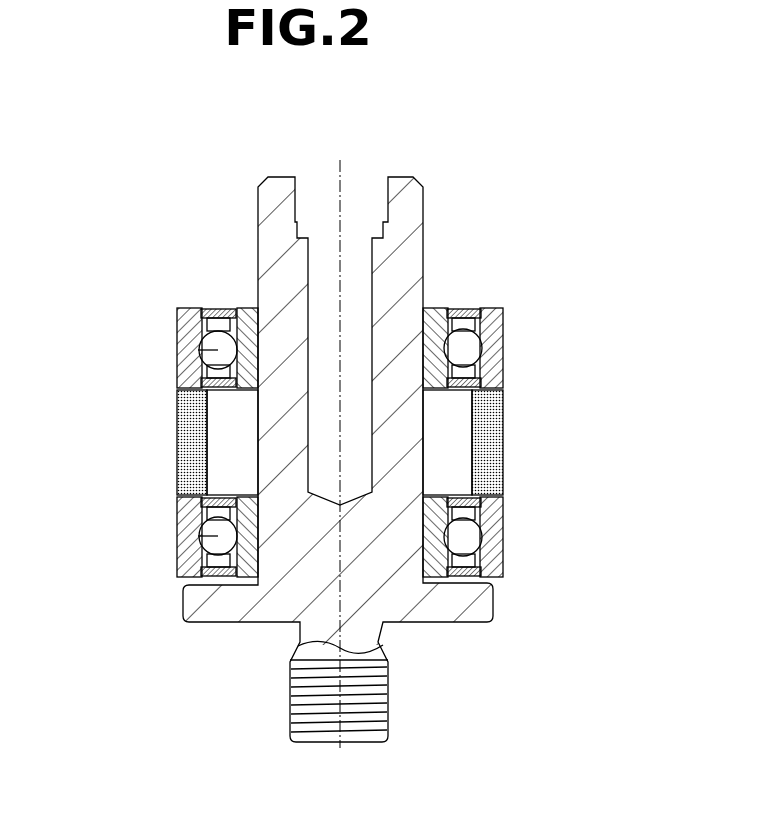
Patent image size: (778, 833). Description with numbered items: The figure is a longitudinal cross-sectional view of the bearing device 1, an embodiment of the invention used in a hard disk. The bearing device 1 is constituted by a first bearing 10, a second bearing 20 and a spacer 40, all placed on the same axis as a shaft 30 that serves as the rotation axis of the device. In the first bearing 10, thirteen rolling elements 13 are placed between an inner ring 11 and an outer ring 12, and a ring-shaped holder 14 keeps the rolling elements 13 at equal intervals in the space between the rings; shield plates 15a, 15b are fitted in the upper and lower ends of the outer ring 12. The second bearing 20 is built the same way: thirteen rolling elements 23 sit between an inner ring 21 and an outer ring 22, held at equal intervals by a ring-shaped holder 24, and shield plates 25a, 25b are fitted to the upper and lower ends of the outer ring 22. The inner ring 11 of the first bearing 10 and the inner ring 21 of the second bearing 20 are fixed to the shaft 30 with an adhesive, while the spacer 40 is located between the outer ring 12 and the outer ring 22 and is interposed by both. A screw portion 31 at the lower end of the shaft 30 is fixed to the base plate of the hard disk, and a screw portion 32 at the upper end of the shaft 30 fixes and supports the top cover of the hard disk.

The bearing device 1 is at (157, 182).
The first bearing 10 is at (150, 333).
The inner ring 11 is at (434, 308).
The outer ring 12 is at (466, 347).
The rolling elements 13 is at (472, 352).
The holder 14 is at (205, 311).
The shield plate 15a is at (481, 306).
The shield plate 15b is at (473, 387).
The second bearing 20 is at (157, 527).
The inner ring 21 is at (437, 498).
The outer ring 22 is at (465, 537).
The rolling elements 23 is at (472, 545).
The holder 24 is at (205, 576).
The shield plate 25a is at (482, 500).
The shield plate 25b is at (471, 574).
The shaft 30 is at (415, 210).
The screw portion 31 is at (352, 710).
The screw portion 32 is at (320, 190).
The spacer 40 is at (177, 436).